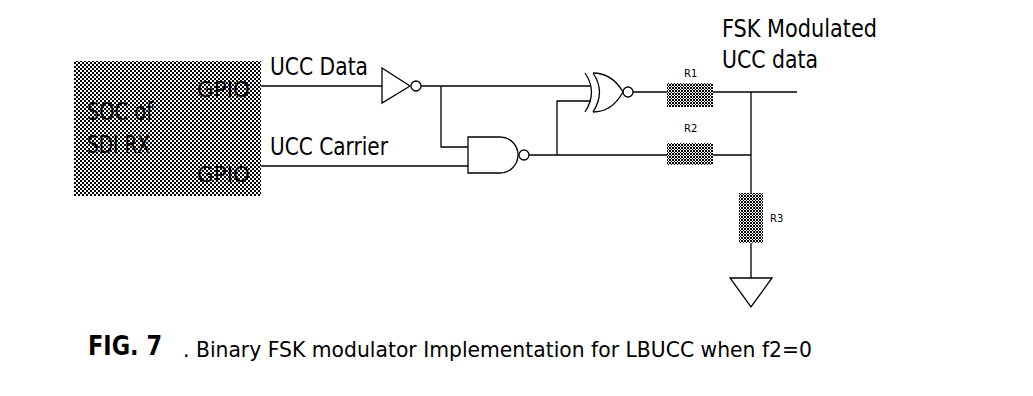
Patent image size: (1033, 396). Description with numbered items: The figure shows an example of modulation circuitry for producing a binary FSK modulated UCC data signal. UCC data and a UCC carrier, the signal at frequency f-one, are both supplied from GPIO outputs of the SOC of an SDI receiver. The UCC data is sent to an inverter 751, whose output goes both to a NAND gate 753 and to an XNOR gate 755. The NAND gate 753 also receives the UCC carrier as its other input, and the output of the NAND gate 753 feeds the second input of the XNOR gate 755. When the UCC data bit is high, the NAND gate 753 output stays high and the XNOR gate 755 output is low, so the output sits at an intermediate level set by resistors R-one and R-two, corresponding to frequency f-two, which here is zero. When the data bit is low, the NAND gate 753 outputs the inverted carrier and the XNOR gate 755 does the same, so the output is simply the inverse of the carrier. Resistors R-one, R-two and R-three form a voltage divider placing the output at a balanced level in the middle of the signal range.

The inverter 751 is at (387, 71).
The NAND gate 753 is at (470, 142).
The XNOR gate 755 is at (605, 85).